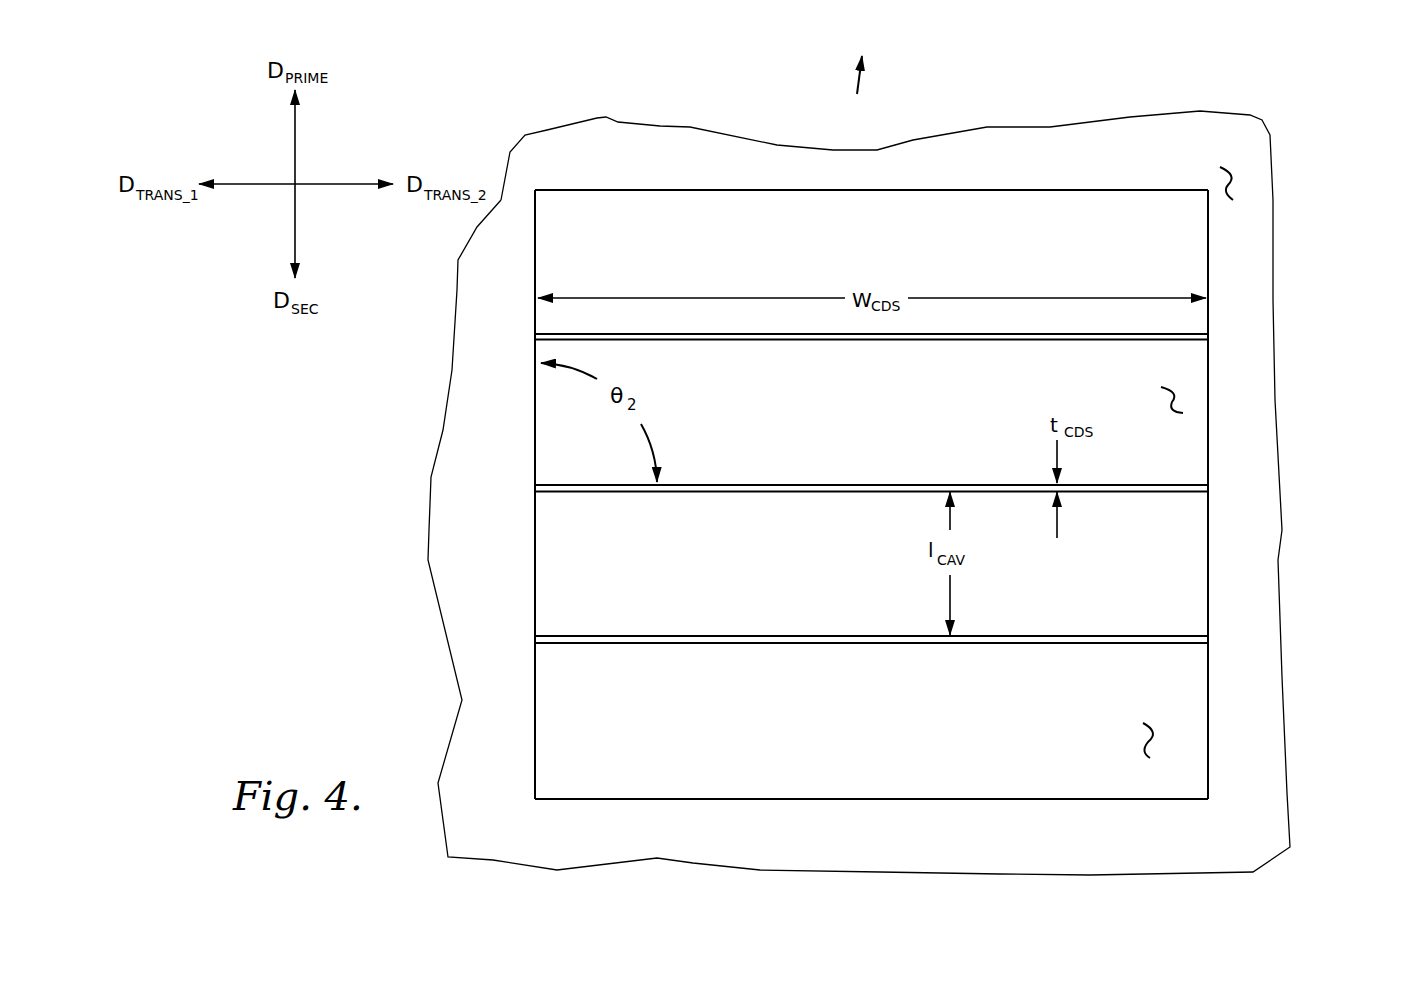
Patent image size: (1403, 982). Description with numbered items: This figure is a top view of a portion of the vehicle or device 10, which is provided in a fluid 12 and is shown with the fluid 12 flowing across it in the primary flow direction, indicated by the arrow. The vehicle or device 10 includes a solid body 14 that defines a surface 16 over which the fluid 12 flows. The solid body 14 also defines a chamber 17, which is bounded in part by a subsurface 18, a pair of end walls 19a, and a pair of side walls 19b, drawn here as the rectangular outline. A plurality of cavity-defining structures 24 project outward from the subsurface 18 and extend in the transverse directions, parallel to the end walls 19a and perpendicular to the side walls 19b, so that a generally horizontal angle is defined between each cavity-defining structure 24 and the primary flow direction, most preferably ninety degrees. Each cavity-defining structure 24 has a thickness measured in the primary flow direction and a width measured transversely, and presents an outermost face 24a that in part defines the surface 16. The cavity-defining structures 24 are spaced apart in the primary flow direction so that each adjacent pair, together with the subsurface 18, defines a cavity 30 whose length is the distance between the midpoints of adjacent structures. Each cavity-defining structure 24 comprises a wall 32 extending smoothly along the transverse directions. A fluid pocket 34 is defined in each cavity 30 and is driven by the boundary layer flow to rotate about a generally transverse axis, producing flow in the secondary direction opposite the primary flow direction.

The vehicle or device 10 is at (1160, 77).
The fluid 12 is at (857, 92).
The solid body 14 is at (1190, 158).
The surface 16 is at (1233, 183).
The chamber 17 is at (647, 757).
The subsurface 18 is at (1178, 400).
The end walls 19a is at (918, 190).
The side walls 19b is at (535, 688).
The cavity-defining structures 24 is at (1186, 333).
The outermost face 24a is at (1148, 337).
The cavity 30 is at (1168, 435).
The wall 32 is at (553, 337).
The fluid pocket 34 is at (1163, 463).